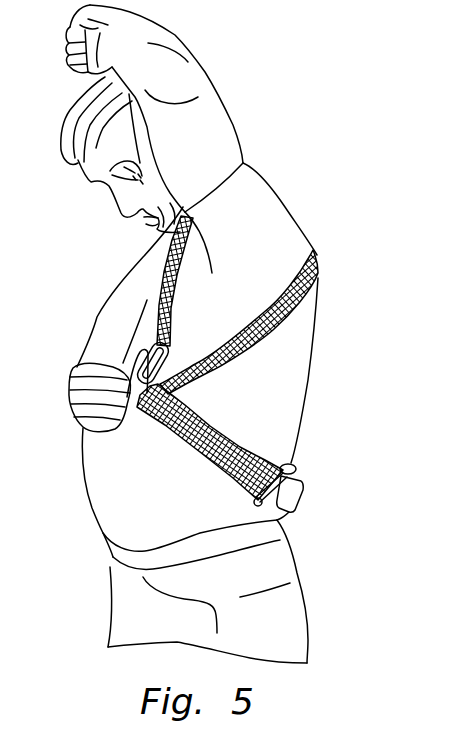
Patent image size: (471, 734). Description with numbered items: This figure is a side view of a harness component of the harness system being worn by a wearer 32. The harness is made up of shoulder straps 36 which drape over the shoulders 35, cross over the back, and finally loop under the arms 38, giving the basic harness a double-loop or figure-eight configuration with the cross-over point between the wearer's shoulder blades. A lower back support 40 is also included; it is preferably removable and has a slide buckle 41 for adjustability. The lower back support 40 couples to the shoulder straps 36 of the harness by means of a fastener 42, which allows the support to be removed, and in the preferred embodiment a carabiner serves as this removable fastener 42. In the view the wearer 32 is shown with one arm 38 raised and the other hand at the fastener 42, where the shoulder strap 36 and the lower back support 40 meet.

The wearer 32 is at (254, 407).
The shoulders 35 is at (283, 200).
The shoulder straps 36 is at (318, 273).
The arms 38 is at (193, 68).
The lower back support 40 is at (294, 492).
The slide buckle 41 is at (253, 502).
The fastener 42 is at (130, 372).